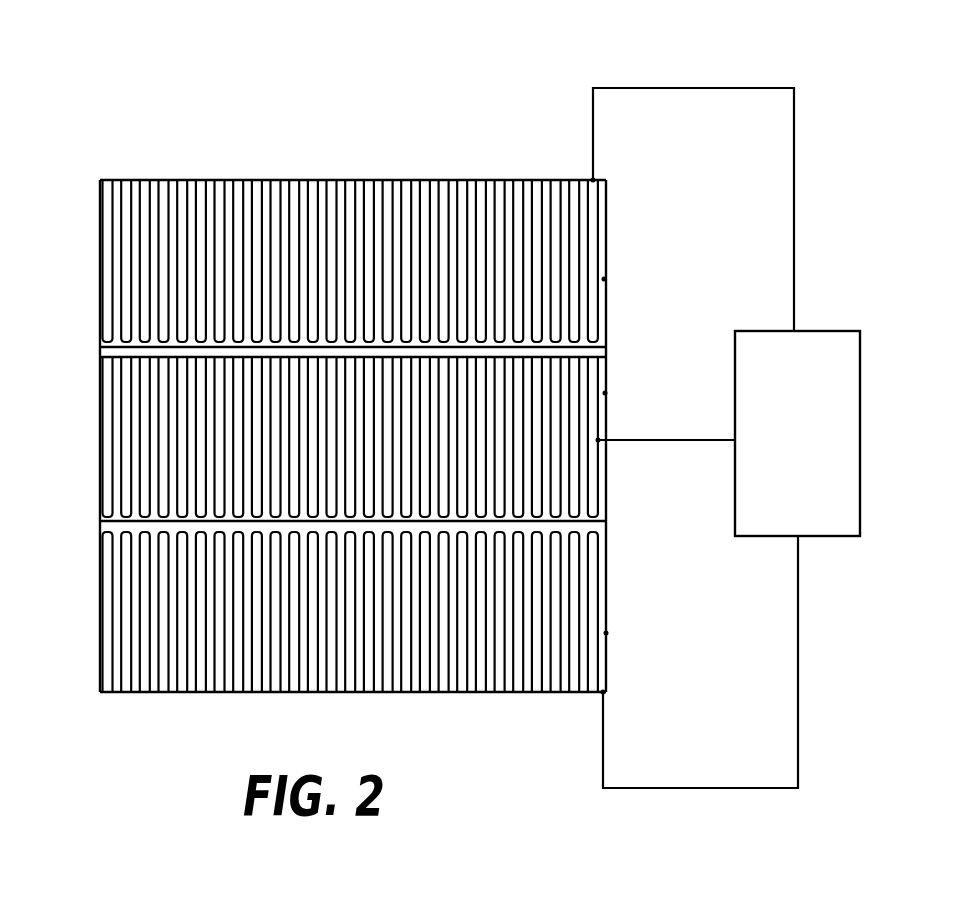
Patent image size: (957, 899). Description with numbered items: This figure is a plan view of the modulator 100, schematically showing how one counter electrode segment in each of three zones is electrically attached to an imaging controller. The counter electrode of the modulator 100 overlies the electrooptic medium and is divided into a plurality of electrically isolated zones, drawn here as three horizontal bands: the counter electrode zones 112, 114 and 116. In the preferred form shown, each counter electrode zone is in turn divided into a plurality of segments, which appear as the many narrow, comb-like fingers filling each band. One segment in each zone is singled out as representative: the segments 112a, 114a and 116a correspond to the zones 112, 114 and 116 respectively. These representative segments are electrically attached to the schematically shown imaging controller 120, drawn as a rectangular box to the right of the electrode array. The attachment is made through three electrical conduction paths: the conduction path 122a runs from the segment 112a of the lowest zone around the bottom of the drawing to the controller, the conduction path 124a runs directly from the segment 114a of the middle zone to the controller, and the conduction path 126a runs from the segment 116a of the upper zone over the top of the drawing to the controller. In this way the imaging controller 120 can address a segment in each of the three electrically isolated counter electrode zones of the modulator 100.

The modulator 100 is at (325, 163).
The counter electrode zone 112 is at (100, 636).
The counter electrode zone 114 is at (100, 455).
The counter electrode zone 116 is at (100, 266).
The segment 112a is at (606, 633).
The segment 114a is at (605, 393).
The segment 116a is at (604, 279).
The imaging controller 120 is at (818, 338).
The electrical conduction path 122a is at (692, 788).
The electrical conduction path 124a is at (665, 442).
The electrical conduction path 126a is at (667, 88).